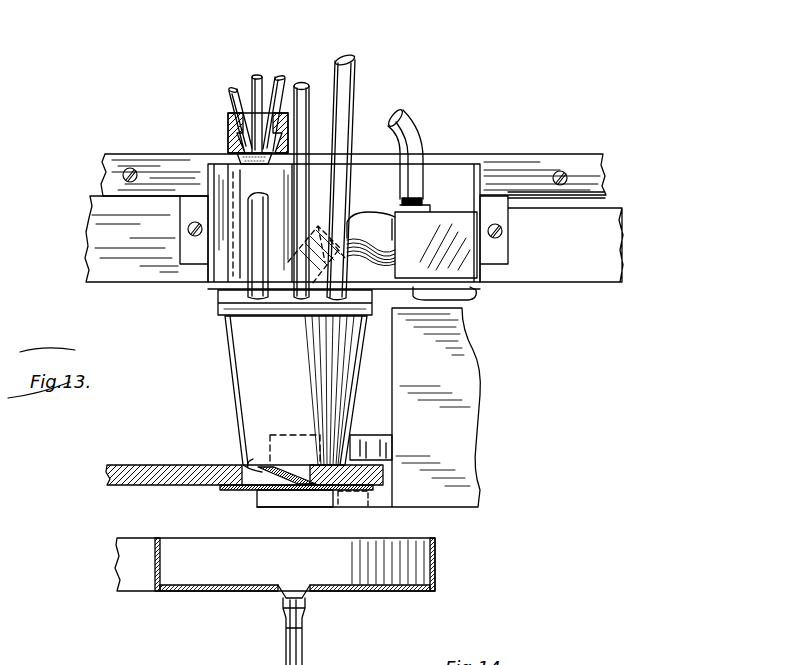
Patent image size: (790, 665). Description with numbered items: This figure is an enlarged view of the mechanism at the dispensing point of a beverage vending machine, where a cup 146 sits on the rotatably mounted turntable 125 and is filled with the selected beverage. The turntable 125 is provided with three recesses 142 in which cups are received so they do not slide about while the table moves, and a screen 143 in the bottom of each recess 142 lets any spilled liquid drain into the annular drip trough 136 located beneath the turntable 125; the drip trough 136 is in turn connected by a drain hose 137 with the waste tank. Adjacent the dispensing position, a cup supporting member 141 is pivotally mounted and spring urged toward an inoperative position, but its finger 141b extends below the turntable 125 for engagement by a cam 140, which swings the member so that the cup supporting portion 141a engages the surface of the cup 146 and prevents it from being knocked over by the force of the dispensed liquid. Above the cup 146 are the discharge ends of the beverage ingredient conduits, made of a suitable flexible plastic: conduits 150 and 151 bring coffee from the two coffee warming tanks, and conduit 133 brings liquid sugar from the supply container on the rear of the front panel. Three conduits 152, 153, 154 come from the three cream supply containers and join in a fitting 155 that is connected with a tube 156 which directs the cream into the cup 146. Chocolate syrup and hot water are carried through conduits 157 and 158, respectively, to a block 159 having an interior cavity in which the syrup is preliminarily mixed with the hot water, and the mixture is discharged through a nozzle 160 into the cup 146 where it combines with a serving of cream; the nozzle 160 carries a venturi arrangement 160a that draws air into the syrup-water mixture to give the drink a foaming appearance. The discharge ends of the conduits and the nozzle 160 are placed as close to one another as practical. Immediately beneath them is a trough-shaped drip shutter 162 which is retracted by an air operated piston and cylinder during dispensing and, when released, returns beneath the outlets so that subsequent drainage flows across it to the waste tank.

The turntable 125 is at (126, 463).
The conduit 133 is at (355, 78).
The annular drip trough 136 is at (437, 555).
The drain hose 137 is at (303, 664).
The cam 140 is at (317, 507).
The cup supporting member 141 is at (460, 349).
The cup supporting portion 141a is at (364, 444).
The finger 141b is at (374, 508).
The recess 142 is at (252, 456).
The screen 143 is at (286, 490).
The cup 146 is at (244, 398).
The conduit 150 is at (256, 250).
The conduit 151 is at (303, 86).
The conduit 152 is at (228, 94).
The conduit 153 is at (257, 76).
The conduit 154 is at (283, 76).
The fitting 155 is at (228, 136).
The tube 156 is at (242, 178).
The conduit 157 is at (405, 126).
The conduit 158 is at (478, 290).
The block 159 is at (460, 220).
The nozzle 160 is at (363, 220).
The venturi arrangement 160a is at (318, 225).
The drip shutter 162 is at (214, 302).